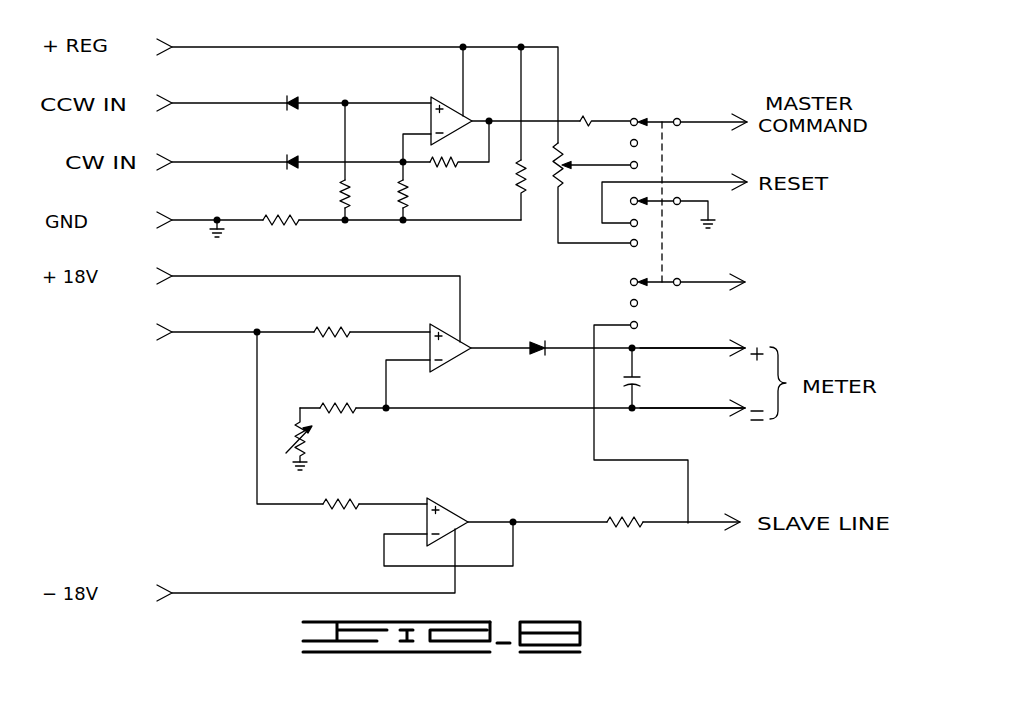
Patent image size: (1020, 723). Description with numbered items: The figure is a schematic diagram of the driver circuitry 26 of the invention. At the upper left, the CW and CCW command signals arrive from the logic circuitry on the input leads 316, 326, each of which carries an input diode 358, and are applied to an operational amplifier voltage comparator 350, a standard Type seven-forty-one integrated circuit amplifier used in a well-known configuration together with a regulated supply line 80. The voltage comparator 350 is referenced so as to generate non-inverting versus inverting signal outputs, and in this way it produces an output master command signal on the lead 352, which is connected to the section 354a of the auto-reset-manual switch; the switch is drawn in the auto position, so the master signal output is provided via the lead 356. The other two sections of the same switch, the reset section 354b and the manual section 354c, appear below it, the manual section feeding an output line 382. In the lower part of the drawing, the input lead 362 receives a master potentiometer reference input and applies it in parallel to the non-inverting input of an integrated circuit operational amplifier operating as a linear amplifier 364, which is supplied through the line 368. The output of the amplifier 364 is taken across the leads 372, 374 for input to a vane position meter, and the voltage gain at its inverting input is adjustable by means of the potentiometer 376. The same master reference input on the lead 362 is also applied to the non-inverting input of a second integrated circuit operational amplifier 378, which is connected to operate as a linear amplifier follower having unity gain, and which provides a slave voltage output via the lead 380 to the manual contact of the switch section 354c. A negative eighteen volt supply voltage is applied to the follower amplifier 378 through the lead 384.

The driver circuitry 26 is at (602, 58).
The regulated voltage input line (+REG) 80 is at (228, 47).
The lead 316 is at (231, 103).
The lead 326 is at (240, 162).
The input diode 358 is at (294, 97).
The operational amplifier voltage comparator 350 is at (455, 100).
The lead 352 is at (567, 121).
The switch section 354a is at (706, 101).
The switch section 354b is at (677, 197).
The switch section 354c is at (676, 279).
The lead 356 is at (724, 122).
The +18V supply line 368 is at (245, 276).
The input lead 362 is at (228, 335).
The linear amplifier 364 is at (447, 366).
The potentiometer 376 is at (307, 438).
The lead 372 is at (665, 348).
The lead 374 is at (683, 413).
The output line 382 is at (708, 284).
The operational amplifier 378 is at (446, 505).
The lead 380 is at (718, 556).
The lead 384 is at (197, 593).